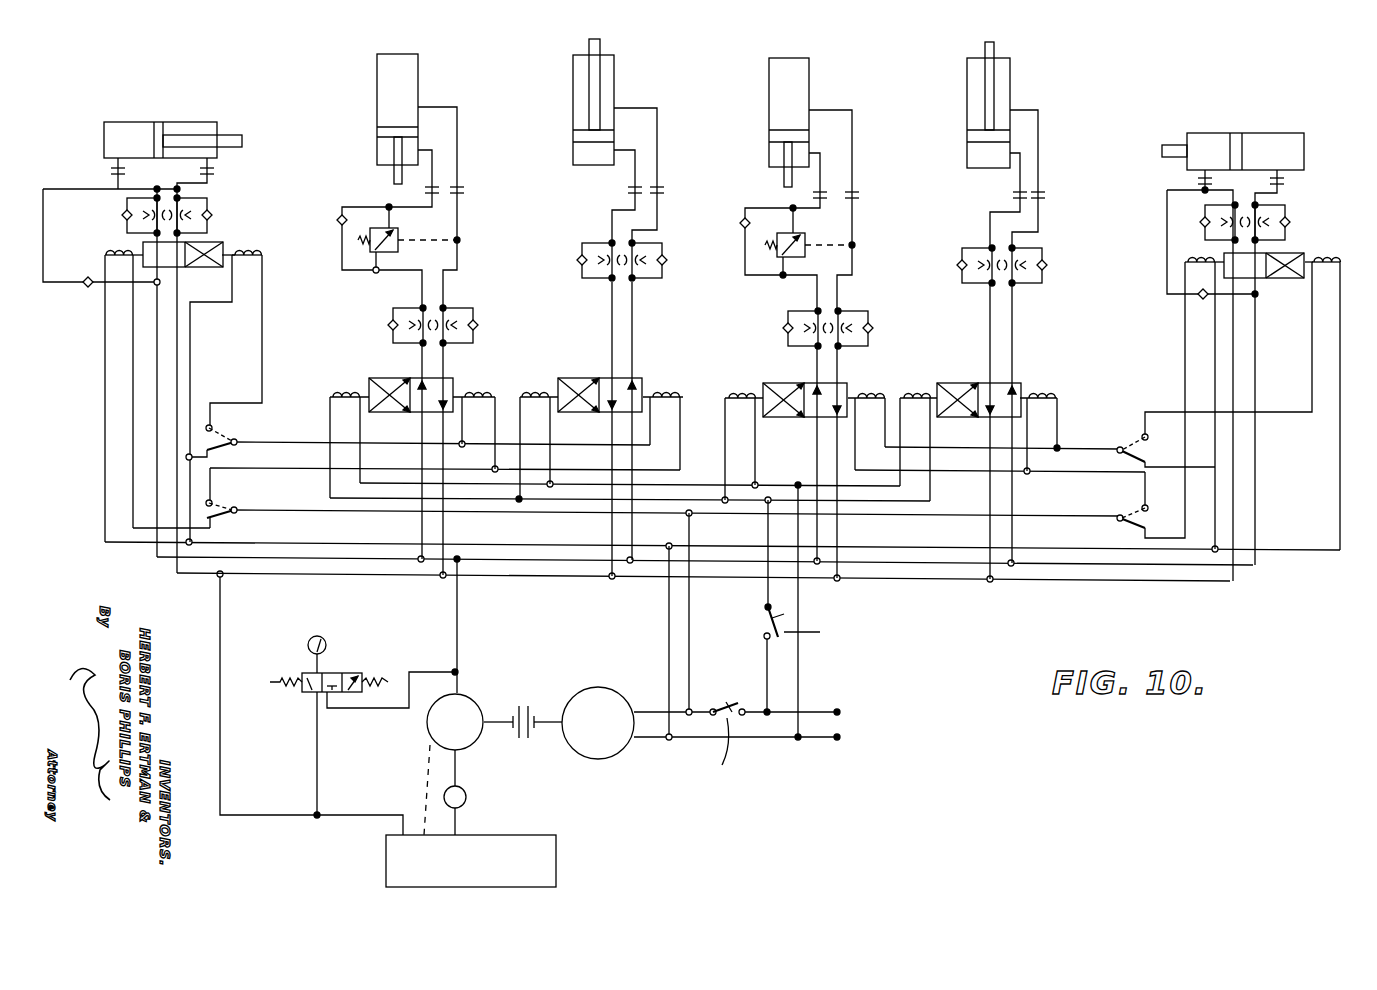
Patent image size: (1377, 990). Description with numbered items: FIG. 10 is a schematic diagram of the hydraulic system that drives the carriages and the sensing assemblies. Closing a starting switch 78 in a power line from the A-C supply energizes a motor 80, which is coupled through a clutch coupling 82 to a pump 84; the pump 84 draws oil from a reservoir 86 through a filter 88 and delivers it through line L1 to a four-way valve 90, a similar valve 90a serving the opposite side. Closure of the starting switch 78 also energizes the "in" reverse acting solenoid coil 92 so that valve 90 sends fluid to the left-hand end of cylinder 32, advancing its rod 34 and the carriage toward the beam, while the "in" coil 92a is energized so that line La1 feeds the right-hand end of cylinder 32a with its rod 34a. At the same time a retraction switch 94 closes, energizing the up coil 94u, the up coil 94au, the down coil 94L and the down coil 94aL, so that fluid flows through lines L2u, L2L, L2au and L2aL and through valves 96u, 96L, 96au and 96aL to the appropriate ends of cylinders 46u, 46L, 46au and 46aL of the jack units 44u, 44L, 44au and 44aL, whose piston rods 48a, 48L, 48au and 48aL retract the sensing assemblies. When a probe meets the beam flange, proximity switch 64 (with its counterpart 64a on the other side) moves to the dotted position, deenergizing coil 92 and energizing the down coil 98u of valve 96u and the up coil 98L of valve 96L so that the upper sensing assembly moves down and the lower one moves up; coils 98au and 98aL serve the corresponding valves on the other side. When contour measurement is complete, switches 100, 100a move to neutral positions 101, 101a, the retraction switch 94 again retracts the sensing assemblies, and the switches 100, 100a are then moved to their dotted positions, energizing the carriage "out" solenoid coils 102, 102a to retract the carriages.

The cylinder 32 is at (104, 141).
The piston rod 34 is at (218, 135).
The four-way valve 90 is at (206, 244).
The "in" reverse acting solenoid coil 92 is at (112, 250).
The carriage "out" solenoid coil 102 is at (252, 252).
The upper hydraulic jack 44u is at (398, 189).
The cylinder 46u is at (420, 92).
The piston rod 48a is at (394, 176).
The lower hydraulic jack 44L is at (591, 156).
The cylinder 46L is at (616, 94).
The piston rod of lower jack 48L is at (592, 96).
The upper hydraulic jack (second side) 44au is at (785, 191).
The cylinder 46au is at (811, 95).
The piston rod (second side) 48au is at (784, 178).
The lower hydraulic jack (second side) 44aL is at (980, 162).
The cylinder 46aL is at (1012, 100).
The piston rod of lower jack (second side) 48aL is at (985, 103).
The cylinder 32a is at (1305, 152).
The piston rod (second side) 34a is at (1168, 144).
The solenoid valve (second side) 90a is at (1283, 260).
The "in" reverse solenoid coil 92a is at (1192, 258).
The carriage "out" solenoid coil 102a is at (1318, 262).
The "up" solenoid coil 94u is at (345, 393).
The valve 96u is at (442, 378).
The "down" solenoid coil 98u is at (486, 387).
The "down" solenoid coil 94L is at (538, 387).
The valve 96L is at (603, 378).
The "up" solenoid coil 98L is at (672, 387).
The up solenoid coil 94au is at (742, 394).
The valve 96au is at (806, 383).
The down solenoid coil (second side) 98au is at (876, 389).
The down solenoid coil 94aL is at (916, 394).
The valve 96aL is at (975, 383).
The up solenoid coil (second side) 98aL is at (1054, 389).
The neutral position 101 is at (207, 446).
The switch 100 is at (225, 442).
The proximity switch 64 is at (228, 516).
The neutral position 101a is at (1150, 450).
The switch 100a is at (1135, 460).
The limit switch (second side) 64a is at (1130, 526).
The retraction switch 94 is at (768, 616).
The starting switch 78 is at (738, 706).
The motor 80 is at (620, 696).
The clutch coupling 82 is at (532, 708).
The pump 84 is at (474, 702).
The reservoir 86 is at (532, 835).
The filter 88 is at (466, 795).
The line L1 is at (157, 338).
The line La1 is at (522, 576).
The line L2u is at (421, 533).
The line L2L is at (630, 533).
The line L2au is at (817, 533).
The line L2aL is at (1010, 506).